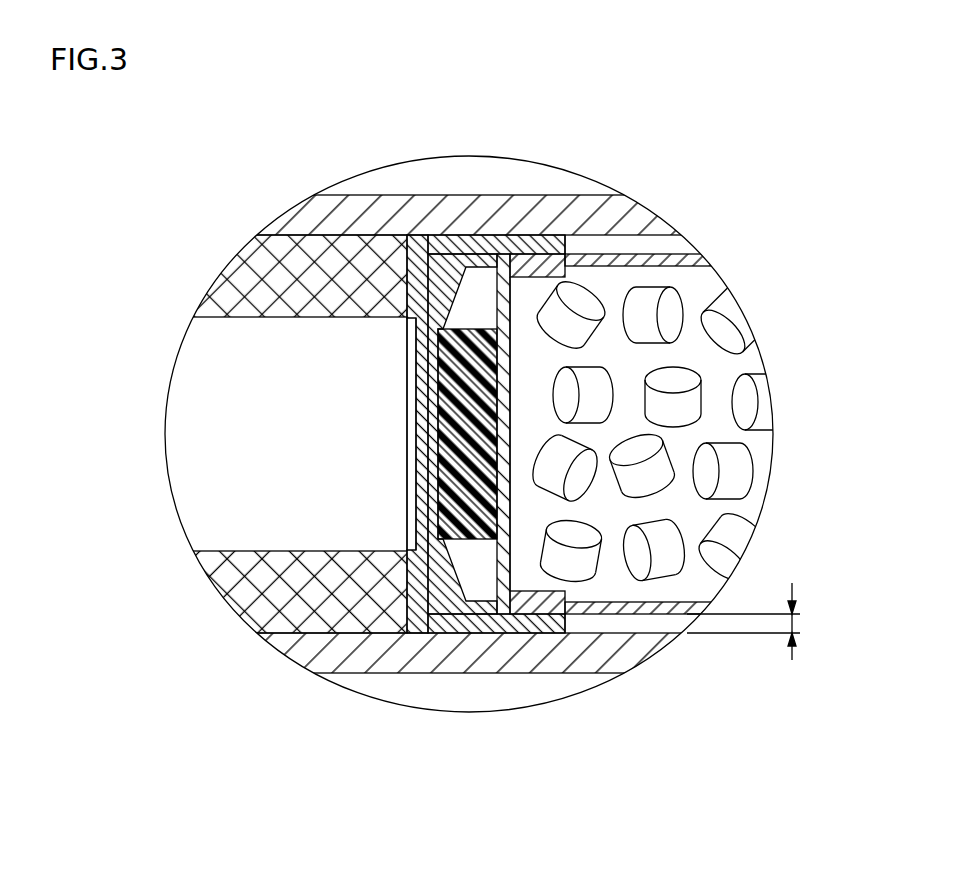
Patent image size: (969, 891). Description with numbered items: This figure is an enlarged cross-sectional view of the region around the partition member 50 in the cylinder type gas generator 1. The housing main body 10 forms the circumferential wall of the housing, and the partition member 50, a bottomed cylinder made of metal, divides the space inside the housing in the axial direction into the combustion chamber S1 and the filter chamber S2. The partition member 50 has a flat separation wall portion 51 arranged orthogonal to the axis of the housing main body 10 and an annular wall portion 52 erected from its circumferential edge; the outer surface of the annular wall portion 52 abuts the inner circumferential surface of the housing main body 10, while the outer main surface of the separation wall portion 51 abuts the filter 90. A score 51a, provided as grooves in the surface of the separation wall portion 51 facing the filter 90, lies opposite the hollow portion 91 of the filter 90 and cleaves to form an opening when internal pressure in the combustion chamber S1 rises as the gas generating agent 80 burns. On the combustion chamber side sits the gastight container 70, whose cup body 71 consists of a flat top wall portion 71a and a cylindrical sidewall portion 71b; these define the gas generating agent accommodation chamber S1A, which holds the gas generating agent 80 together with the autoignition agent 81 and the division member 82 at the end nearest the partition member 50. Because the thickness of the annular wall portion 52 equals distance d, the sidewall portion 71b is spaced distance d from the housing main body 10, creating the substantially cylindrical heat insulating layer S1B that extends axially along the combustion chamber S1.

The cylinder type gas generator 1 is at (820, 114).
The housing main body 10 is at (348, 213).
The partition member 50 is at (321, 355).
The separation wall portion 51 is at (281, 373).
The score 51a is at (415, 441).
The annular wall portion 52 is at (523, 248).
The gastight container 70 is at (653, 364).
The cup body 71 is at (653, 434).
The top wall portion 71a is at (438, 310).
The sidewall portion 71b is at (632, 260).
The gas generating agent 80 is at (737, 473).
The autoignition agent 81 is at (470, 412).
The division member 82 is at (505, 558).
The filter 90 is at (268, 277).
The hollow portion 91 is at (235, 501).
The combustion chamber S1 is at (658, 246).
The gas generating agent accommodation chamber S1A is at (742, 512).
The heat insulating layer S1B is at (632, 628).
The filter chamber S2 is at (215, 370).
The distance d is at (755, 621).